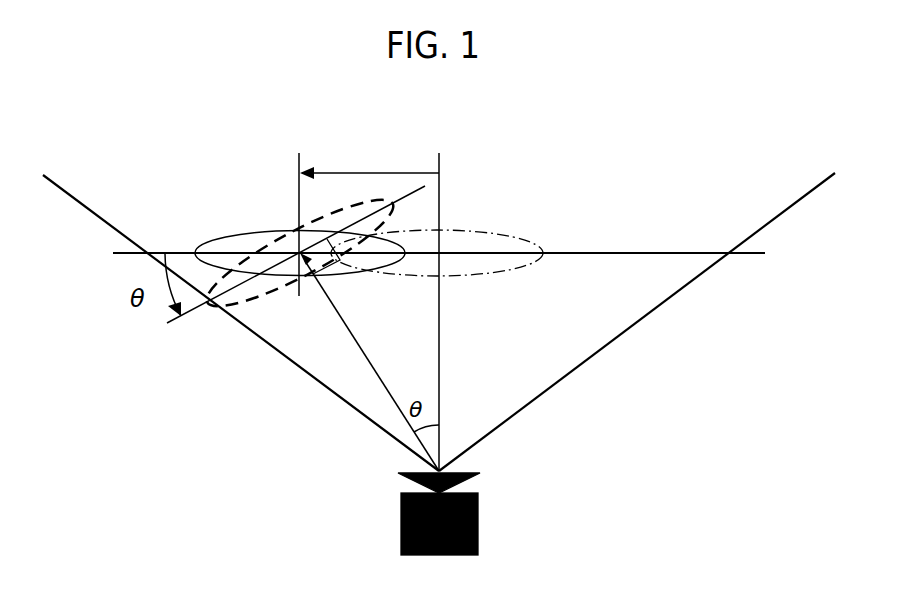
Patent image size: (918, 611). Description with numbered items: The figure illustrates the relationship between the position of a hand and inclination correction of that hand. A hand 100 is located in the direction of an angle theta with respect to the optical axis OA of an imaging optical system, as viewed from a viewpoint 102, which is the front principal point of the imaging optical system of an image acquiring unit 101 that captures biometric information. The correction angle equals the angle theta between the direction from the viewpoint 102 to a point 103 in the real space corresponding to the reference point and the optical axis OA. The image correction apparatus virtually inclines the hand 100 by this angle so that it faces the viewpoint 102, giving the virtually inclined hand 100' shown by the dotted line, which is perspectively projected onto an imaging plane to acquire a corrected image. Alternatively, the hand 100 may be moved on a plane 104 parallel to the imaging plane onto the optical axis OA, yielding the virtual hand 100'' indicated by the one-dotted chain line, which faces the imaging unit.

The hand 100 is at (279, 215).
The virtually inclined hand 100' is at (295, 293).
The virtual hand 100'' is at (453, 218).
The image acquiring unit 101 is at (477, 540).
The viewpoint 102 is at (452, 470).
The point in the real space corresponding to the reference point 103 is at (296, 232).
The plane 104 is at (743, 255).
The optical axis OA is at (440, 363).